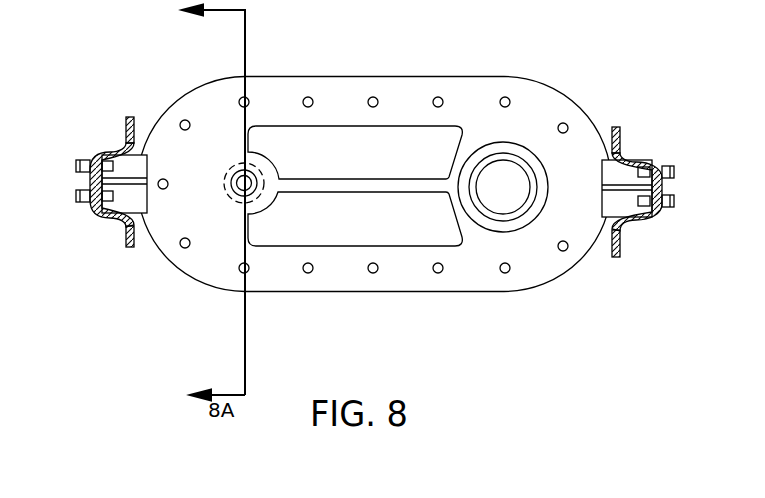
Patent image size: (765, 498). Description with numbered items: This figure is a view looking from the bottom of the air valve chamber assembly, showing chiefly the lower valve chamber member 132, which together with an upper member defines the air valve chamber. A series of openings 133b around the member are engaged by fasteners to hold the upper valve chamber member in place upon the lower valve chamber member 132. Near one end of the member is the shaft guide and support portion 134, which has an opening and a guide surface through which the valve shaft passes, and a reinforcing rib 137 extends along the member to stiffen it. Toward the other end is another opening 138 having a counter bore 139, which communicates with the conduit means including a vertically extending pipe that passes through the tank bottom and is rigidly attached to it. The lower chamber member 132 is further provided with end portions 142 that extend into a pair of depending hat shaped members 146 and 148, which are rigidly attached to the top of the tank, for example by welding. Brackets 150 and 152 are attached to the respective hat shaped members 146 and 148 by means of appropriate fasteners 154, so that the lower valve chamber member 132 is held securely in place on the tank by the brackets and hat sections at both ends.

The lower valve chamber member 132 is at (386, 234).
The openings 133b is at (240, 273).
The shaft guide and support portion 134 is at (262, 155).
The reinforcing rib 137 is at (387, 188).
The opening 138 is at (528, 203).
The counter bore 139 is at (513, 232).
The end portion 142 is at (133, 151).
The hat shaped member 146 is at (642, 230).
The hat shaped member 148 is at (100, 220).
The bracket 150 is at (615, 205).
The bracket 152 is at (135, 200).
The fasteners 154 is at (88, 167).